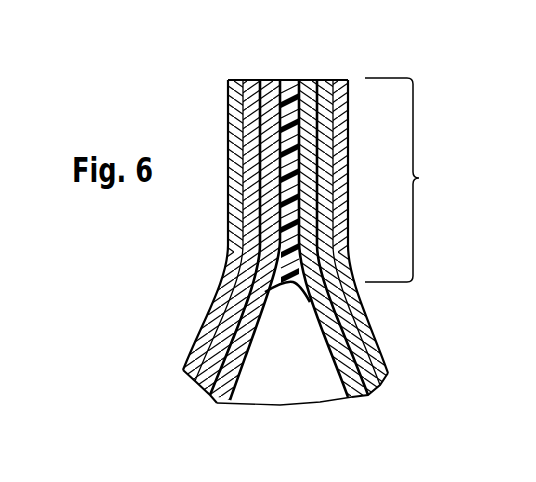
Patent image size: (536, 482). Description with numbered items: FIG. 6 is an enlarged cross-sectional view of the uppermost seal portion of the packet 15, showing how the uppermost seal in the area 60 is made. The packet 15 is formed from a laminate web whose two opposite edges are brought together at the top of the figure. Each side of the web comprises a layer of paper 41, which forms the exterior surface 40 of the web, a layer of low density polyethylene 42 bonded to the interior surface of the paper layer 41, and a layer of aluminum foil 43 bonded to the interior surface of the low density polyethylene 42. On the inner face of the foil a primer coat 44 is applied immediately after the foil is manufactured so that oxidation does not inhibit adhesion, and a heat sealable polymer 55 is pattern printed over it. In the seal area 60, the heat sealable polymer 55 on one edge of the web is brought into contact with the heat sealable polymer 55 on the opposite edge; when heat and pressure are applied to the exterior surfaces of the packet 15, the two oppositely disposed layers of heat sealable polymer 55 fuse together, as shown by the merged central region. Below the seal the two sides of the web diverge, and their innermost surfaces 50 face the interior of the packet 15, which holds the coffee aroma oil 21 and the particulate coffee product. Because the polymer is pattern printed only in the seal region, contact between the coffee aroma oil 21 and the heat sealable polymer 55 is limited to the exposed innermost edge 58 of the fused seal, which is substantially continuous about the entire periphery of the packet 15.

The packet 15 is at (232, 79).
The primer coat 44 is at (271, 88).
The heat sealable polymer 55 is at (281, 86).
The innermost edge of the peripheral seal 58 is at (293, 286).
The innermost surfaces 50 is at (250, 328).
The layer of aluminum foil 43 is at (240, 350).
The exterior surface 40 is at (198, 352).
The layer of paper 41 is at (228, 290).
The layer of low density polyethylene 42 is at (222, 336).
The coffee aroma oil 21 is at (230, 403).
The uppermost seal area 60 is at (409, 180).